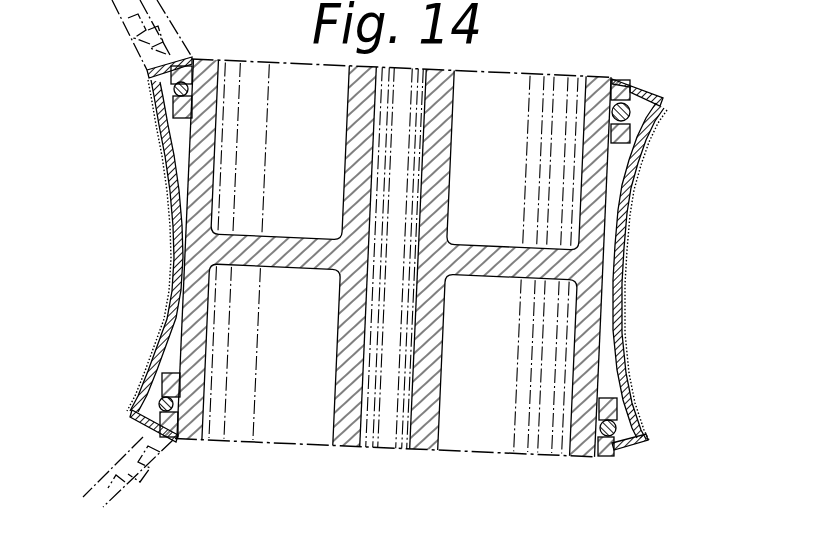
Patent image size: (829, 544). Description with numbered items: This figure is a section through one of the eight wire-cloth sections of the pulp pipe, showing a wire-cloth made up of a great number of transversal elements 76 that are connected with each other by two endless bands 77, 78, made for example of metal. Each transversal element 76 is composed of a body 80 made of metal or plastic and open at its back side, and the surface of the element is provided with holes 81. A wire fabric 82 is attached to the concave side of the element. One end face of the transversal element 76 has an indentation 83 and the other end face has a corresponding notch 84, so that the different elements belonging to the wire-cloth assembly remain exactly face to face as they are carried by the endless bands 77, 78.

The transversal element 76 is at (646, 282).
The endless band 77 is at (611, 79).
The endless band 78 is at (593, 460).
The body 80 is at (621, 449).
The holes 81 is at (627, 350).
The wire fabric 82 is at (640, 181).
The indentation 83 is at (619, 451).
The notch 84 is at (641, 88).